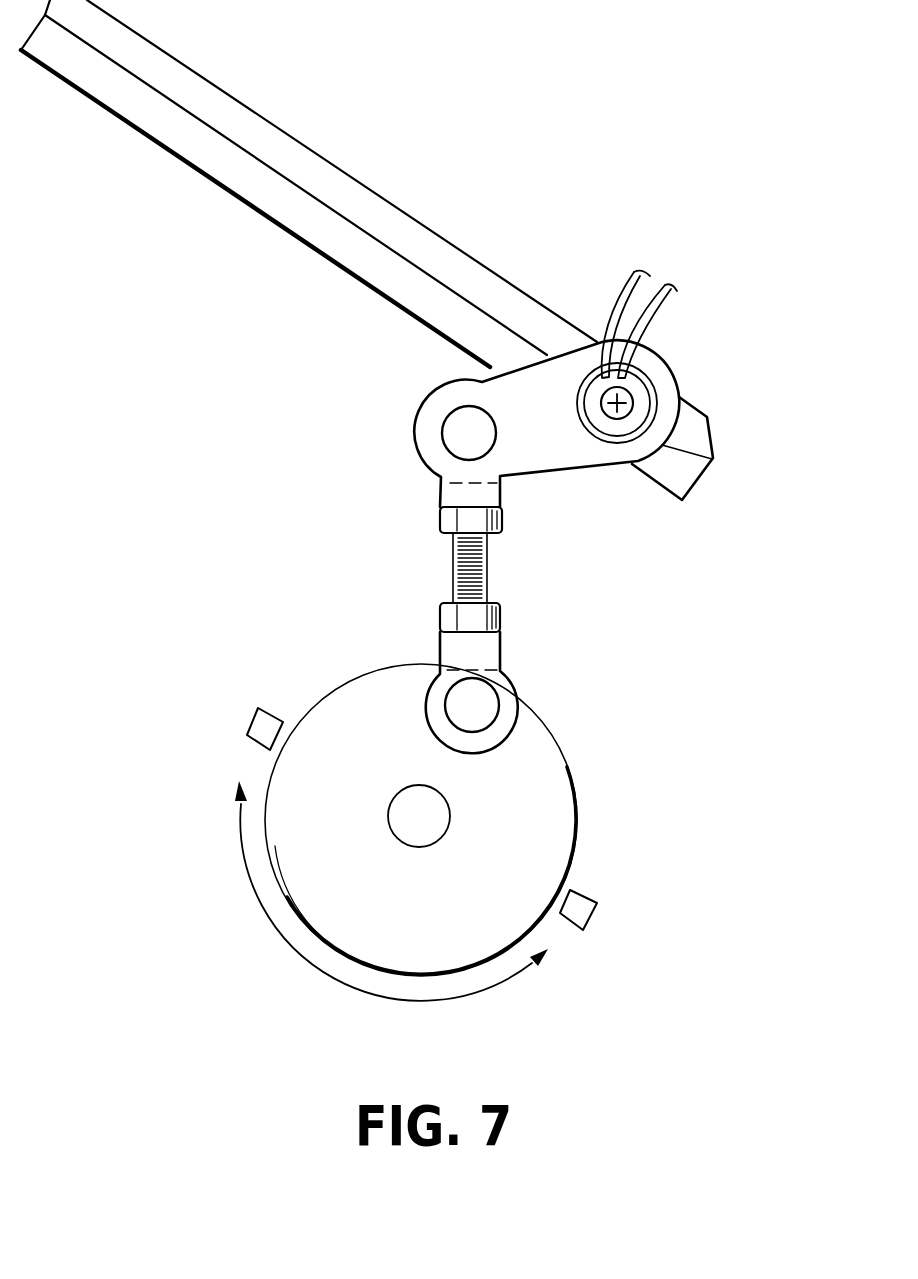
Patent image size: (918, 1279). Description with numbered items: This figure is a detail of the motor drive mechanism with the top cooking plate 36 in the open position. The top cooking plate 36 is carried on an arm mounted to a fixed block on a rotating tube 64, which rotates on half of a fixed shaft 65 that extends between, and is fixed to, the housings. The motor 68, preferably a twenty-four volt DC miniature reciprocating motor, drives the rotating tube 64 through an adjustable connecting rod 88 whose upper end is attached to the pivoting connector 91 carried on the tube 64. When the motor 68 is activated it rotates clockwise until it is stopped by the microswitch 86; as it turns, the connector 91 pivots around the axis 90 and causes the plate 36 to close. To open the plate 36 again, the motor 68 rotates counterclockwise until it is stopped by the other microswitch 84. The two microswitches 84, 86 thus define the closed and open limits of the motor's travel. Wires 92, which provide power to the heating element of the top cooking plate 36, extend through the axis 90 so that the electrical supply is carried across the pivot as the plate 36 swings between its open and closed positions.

The top cooking plate 36 is at (300, 107).
The rotating tube 64 is at (682, 378).
The fixed shaft 65 is at (616, 420).
The motor 68 is at (572, 760).
The microswitch 84 is at (248, 715).
The microswitch 86 is at (601, 914).
The adjustable connecting rod 88 is at (446, 560).
The axis 90 is at (630, 392).
The lever arm 91 is at (575, 478).
The wires 92 is at (662, 311).